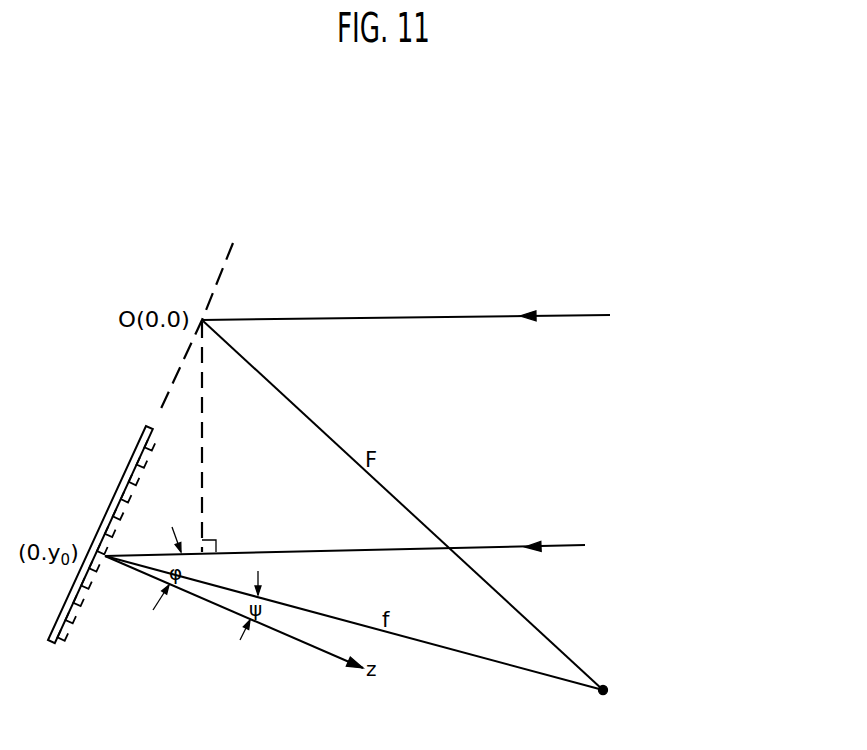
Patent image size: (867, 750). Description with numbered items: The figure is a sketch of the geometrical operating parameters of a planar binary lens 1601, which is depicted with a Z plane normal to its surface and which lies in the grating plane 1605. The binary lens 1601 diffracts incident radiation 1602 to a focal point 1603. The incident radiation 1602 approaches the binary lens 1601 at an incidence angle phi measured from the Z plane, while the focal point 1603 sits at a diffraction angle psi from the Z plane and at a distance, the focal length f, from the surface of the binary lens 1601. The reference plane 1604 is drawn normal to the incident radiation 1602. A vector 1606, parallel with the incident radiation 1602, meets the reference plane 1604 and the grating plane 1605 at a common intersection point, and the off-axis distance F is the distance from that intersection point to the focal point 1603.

The binary lens 1601 is at (85, 637).
The incident radiation 1602 is at (435, 531).
The focal point 1603 is at (437, 639).
The reference plane 1604 is at (204, 428).
The grating plane 1605 is at (232, 253).
The vector 1606 is at (481, 312).